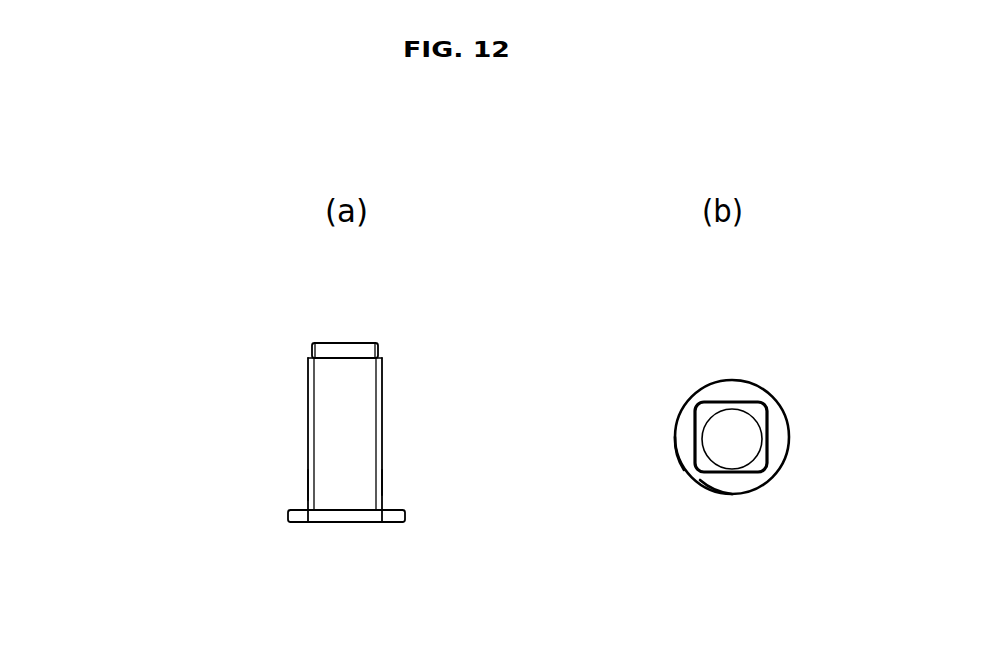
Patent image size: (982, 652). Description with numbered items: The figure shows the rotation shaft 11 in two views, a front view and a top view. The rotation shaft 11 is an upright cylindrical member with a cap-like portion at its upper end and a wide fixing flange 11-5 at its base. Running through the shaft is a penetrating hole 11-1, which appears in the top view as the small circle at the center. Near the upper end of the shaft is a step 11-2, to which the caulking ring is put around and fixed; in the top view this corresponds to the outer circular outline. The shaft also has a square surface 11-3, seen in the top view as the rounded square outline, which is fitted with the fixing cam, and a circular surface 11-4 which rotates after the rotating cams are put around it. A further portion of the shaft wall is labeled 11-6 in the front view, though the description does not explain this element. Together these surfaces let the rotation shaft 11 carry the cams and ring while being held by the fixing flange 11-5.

The rotation shaft 11 is at (297, 398).
The penetrating hole 11-1 is at (732, 437).
The step 11-2 is at (685, 410).
The square surface 11-3 is at (690, 440).
The circular surface 11-4 is at (688, 473).
The fixing flange 11-5 is at (722, 488).
The side wall portion 11-6 is at (328, 480).